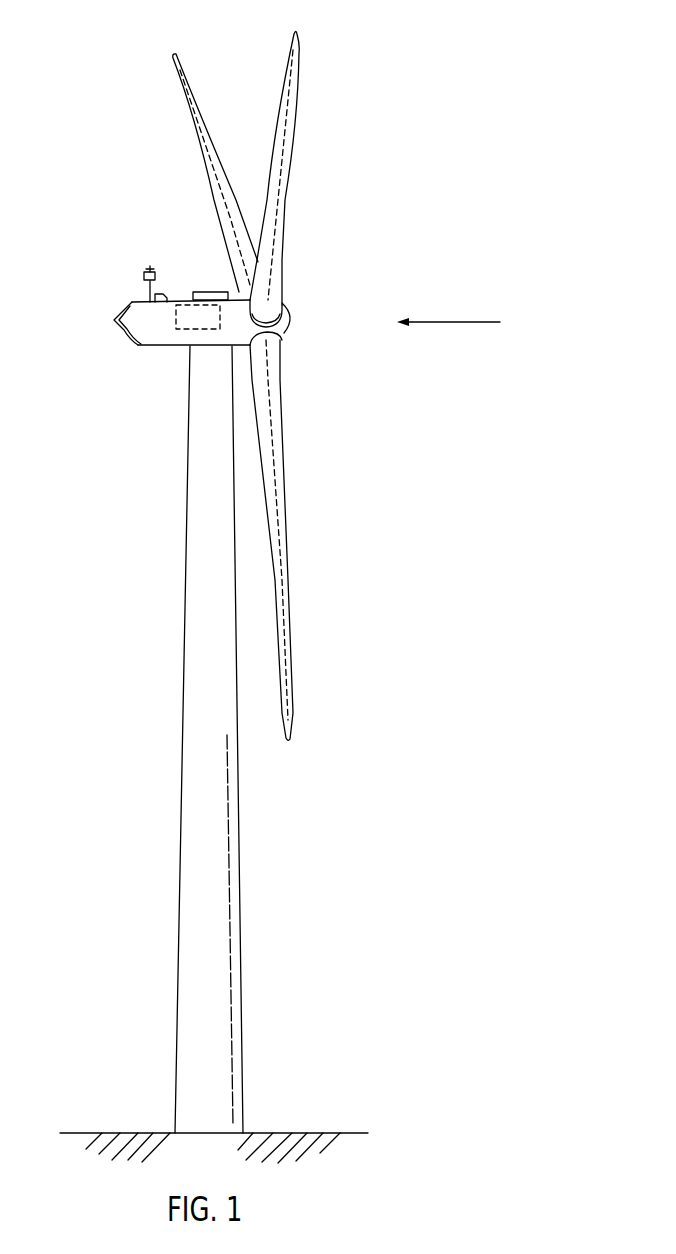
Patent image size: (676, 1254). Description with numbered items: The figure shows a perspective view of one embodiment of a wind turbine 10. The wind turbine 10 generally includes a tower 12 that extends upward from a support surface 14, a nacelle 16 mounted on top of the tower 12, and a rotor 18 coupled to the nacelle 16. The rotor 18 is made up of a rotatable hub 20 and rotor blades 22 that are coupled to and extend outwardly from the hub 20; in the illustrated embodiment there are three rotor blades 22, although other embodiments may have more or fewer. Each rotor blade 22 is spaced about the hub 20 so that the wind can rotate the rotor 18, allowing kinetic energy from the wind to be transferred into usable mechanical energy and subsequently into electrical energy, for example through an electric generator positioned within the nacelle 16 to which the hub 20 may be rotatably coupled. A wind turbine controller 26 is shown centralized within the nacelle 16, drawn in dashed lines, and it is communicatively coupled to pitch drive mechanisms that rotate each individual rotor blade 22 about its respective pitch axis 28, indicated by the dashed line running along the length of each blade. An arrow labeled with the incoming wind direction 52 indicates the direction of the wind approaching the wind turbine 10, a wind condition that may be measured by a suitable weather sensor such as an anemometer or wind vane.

The wind turbine 10 is at (418, 106).
The tower 12 is at (180, 808).
The support surface 14 is at (133, 1133).
The nacelle 16 is at (155, 348).
The rotor 18 is at (299, 297).
The rotatable hub 20 is at (294, 328).
The rotor blade 22 is at (204, 118).
The wind turbine controller 26 is at (190, 297).
The pitch axis 28 is at (213, 194).
The incoming wind direction 52 is at (464, 326).